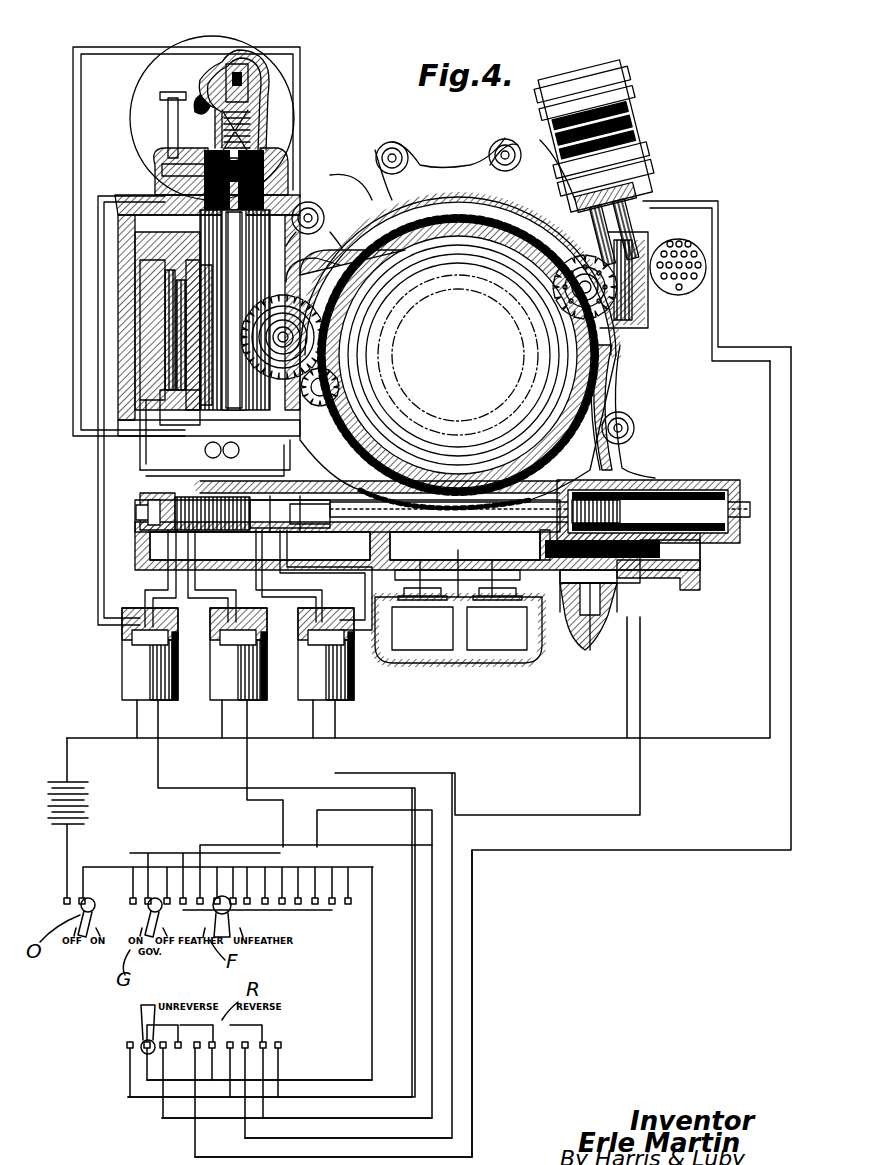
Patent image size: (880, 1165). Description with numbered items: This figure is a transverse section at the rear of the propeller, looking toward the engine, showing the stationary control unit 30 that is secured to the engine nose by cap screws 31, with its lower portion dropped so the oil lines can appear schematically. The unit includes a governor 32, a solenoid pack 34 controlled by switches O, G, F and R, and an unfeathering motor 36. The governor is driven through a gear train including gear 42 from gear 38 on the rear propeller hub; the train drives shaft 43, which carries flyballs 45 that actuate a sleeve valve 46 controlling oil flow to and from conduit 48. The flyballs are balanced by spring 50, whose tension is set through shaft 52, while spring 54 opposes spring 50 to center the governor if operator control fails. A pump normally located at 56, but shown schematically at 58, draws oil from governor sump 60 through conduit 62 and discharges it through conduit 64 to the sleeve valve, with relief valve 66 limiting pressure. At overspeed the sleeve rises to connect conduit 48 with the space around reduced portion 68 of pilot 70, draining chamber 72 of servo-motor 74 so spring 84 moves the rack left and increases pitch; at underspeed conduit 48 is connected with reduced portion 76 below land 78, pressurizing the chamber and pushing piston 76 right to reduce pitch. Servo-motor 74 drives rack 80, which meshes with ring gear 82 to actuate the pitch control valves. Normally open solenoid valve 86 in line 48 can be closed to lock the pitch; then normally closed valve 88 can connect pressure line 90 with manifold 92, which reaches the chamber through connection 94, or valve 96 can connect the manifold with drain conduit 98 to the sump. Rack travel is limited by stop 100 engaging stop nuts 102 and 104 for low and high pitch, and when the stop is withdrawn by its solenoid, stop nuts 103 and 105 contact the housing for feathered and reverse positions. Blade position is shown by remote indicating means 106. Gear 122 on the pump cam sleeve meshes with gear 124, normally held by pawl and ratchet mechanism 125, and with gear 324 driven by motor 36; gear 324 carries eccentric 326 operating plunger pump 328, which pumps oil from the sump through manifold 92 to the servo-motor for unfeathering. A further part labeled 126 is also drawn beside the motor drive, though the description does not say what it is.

The control unit 30 is at (360, 195).
The cap screws 31 is at (503, 138).
The governor 32 is at (265, 86).
The solenoid pack 34 is at (111, 679).
The unfeathering motor 36 is at (630, 118).
The gear 38 is at (368, 332).
The gear 42 is at (290, 280).
The shaft 43 is at (198, 293).
The flyballs 45 is at (326, 213).
The sleeve valve 46 is at (160, 233).
The conduit 48 is at (112, 196).
The spring 50 is at (252, 135).
The shaft 52 is at (203, 100).
The spring 54 is at (240, 62).
The pump location 56 is at (185, 410).
The pump 58 is at (140, 458).
The governor sump 60 is at (163, 335).
The conduit 62 is at (140, 473).
The conduit 64 is at (73, 330).
The relief valve 66 is at (182, 372).
The reduced portion 68 is at (245, 178).
The pilot 70 is at (265, 161).
The chamber 72 is at (155, 538).
The servo-motor 74 is at (210, 540).
The reduced portion 76 is at (220, 218).
The land 78 is at (200, 206).
The rack 80 is at (425, 500).
The ring gear 82 is at (390, 487).
The spring 84 is at (680, 481).
The solenoid actuated valve 86 is at (135, 640).
The solenoid actuated valve 88 is at (225, 640).
The pressure line 90 is at (196, 590).
The manifold 92 is at (250, 595).
The connection 94 is at (168, 573).
The solenoid actuated valve 96 is at (312, 642).
The conduit 98 is at (290, 559).
The stop 100 is at (614, 595).
The stop nut 102 is at (560, 544).
The stop nut 103 is at (540, 510).
The stop nut 104 is at (622, 580).
The stop nut 105 is at (632, 578).
The remote indicating means 106 is at (428, 640).
The gear 122 is at (495, 428).
The gear 124 is at (608, 322).
The pawl and ratchet mechanism 125 is at (583, 318).
The vent 126 is at (652, 302).
The gear 324 is at (350, 365).
The eccentric 326 is at (360, 352).
The plunger pump 328 is at (300, 440).